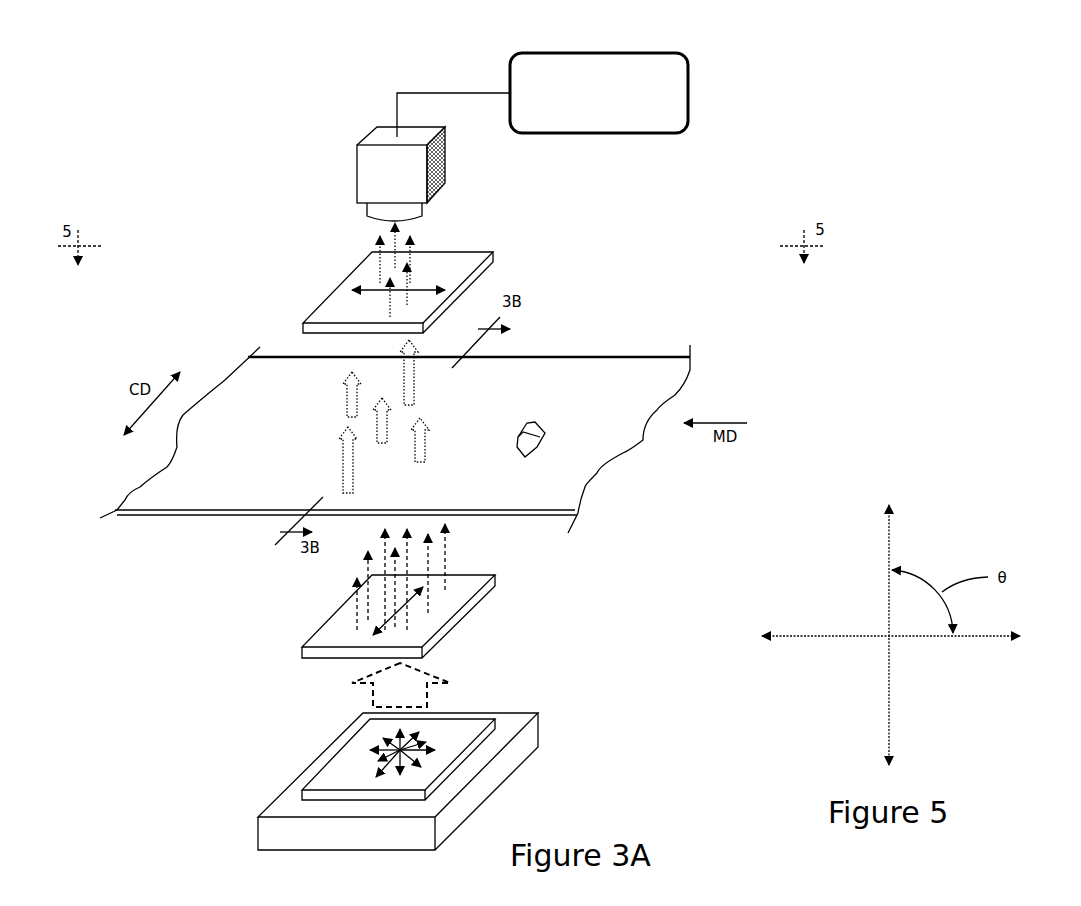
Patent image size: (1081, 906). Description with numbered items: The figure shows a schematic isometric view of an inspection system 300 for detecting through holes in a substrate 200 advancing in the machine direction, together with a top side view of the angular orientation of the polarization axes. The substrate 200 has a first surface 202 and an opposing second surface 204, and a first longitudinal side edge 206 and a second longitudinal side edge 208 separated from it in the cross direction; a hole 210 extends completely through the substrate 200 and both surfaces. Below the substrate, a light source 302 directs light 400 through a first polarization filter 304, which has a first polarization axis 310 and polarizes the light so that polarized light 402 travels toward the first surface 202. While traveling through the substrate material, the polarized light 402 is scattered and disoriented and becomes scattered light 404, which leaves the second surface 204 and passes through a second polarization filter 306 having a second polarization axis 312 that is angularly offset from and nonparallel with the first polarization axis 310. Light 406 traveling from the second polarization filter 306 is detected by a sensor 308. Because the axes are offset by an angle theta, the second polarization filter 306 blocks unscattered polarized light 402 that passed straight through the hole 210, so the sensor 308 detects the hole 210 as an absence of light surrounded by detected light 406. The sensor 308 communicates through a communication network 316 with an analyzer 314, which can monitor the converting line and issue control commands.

In FIG. 3A, the inspection system 300 is at (240, 113).
In FIG. 3A, the analyzer 314 is at (665, 133).
In FIG. 3A, the communication network 316 is at (467, 93).
In FIG. 3A, the sensor 308 is at (440, 167).
In FIG. 3A, the light traveling from the second polarization filter 406 is at (456, 240).
In FIG. 3A, the second polarization filter 306 is at (333, 310).
In FIG. 3A, the second polarization axis 312 is at (366, 290).
In FIG. 5, the second polarization axis 312 is at (830, 636).
In FIG. 3A, the substrate 200 is at (625, 402).
In FIG. 3A, the second surface 204 is at (598, 428).
In FIG. 3A, the first surface 202 is at (148, 517).
In FIG. 3A, the first longitudinal side edge 206 is at (192, 517).
In FIG. 3A, the second longitudinal side edge 208 is at (676, 345).
In FIG. 3A, the scattered light 404 is at (333, 392).
In FIG. 3A, the hole 210 is at (535, 440).
In FIG. 3A, the first polarization filter 304 is at (317, 652).
In FIG. 3A, the polarized light 402 is at (458, 548).
In FIG. 3A, the first polarization axis 310 is at (390, 620).
In FIG. 5, the first polarization axis 310 is at (889, 710).
In FIG. 3A, the light 400 is at (459, 692).
In FIG. 3A, the light source 302 is at (510, 760).